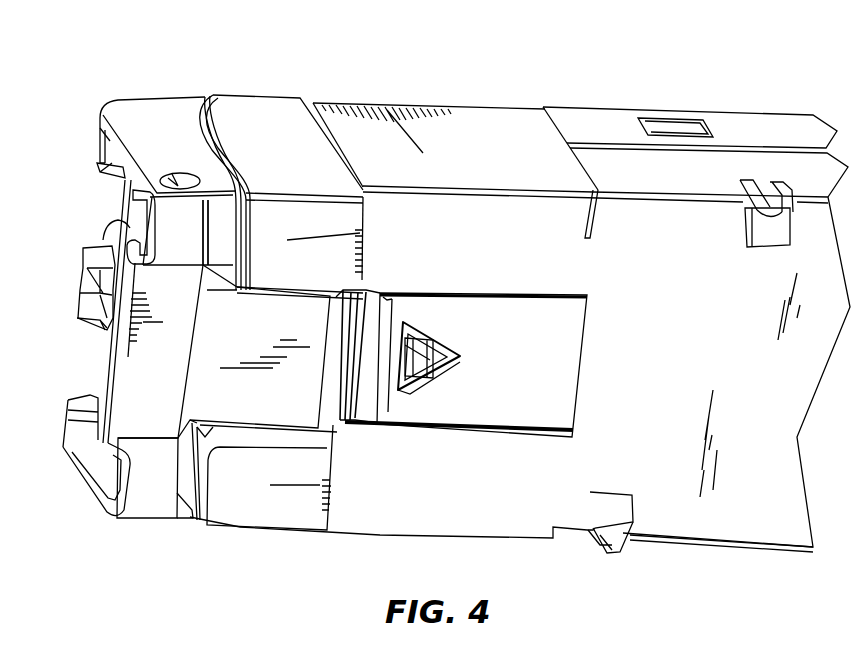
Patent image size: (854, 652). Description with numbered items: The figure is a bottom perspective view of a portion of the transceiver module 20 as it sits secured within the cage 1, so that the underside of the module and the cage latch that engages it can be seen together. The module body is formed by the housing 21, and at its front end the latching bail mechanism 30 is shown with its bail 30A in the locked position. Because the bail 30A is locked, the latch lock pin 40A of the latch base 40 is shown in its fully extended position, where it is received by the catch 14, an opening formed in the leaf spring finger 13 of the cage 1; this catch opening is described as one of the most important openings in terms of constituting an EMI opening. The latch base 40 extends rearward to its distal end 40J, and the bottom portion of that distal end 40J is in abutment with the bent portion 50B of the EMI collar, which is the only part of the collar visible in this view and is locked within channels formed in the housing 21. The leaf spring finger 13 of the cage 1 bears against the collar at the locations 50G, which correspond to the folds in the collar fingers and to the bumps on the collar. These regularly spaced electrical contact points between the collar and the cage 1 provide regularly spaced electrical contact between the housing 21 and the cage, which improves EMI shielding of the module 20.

The rack 1 is at (440, 127).
The leaf spring finger 13 is at (403, 308).
The catch 14 is at (430, 330).
The transceiver module 20 is at (133, 76).
The housing 21 is at (245, 112).
The latching bail mechanism 30 is at (168, 108).
The bail 30A is at (97, 167).
The latch base 40 is at (193, 380).
The latch lock pin 40A is at (447, 370).
The distal end of the latch base 40J is at (293, 405).
The bent portion of the collar 50B is at (343, 393).
The contact locations on the collar 50G is at (405, 219).